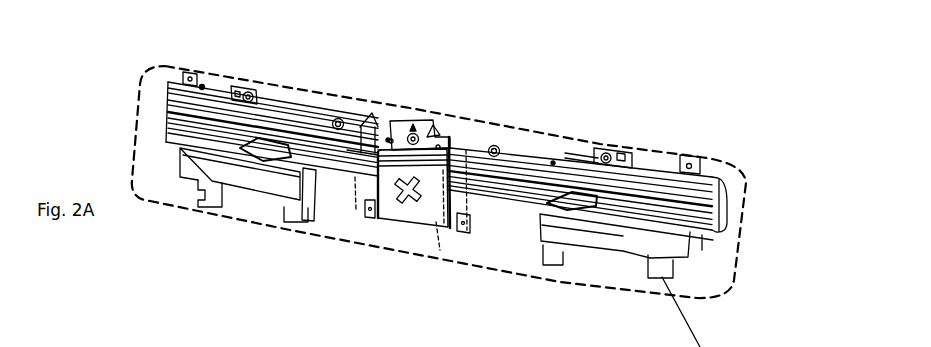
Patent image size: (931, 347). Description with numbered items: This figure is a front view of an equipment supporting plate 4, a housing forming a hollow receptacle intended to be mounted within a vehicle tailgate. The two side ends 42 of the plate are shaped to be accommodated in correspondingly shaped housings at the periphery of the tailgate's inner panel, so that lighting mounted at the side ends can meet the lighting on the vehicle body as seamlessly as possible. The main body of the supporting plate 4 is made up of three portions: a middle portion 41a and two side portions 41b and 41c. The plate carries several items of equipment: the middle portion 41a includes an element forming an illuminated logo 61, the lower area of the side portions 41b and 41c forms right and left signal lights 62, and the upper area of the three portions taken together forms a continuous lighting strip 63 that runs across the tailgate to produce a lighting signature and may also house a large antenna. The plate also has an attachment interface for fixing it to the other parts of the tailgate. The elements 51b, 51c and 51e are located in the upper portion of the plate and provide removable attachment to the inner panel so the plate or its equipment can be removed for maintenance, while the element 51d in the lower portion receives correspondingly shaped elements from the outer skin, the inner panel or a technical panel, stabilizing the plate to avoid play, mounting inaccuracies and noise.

The equipment supporting plate 4 is at (390, 243).
The side ends 42 is at (173, 113).
The signal lights 62 is at (212, 182).
The illuminated logo 61 is at (413, 197).
The attachment interface element 51d is at (463, 230).
The middle portion 41a is at (398, 118).
The side portion 41b is at (259, 82).
The side portion 41c is at (580, 137).
The attachment interface element 51c is at (251, 95).
The attachment interface element 51b is at (186, 70).
The continuous lighting strip 63 is at (214, 84).
The attachment interface element 51e is at (340, 117).